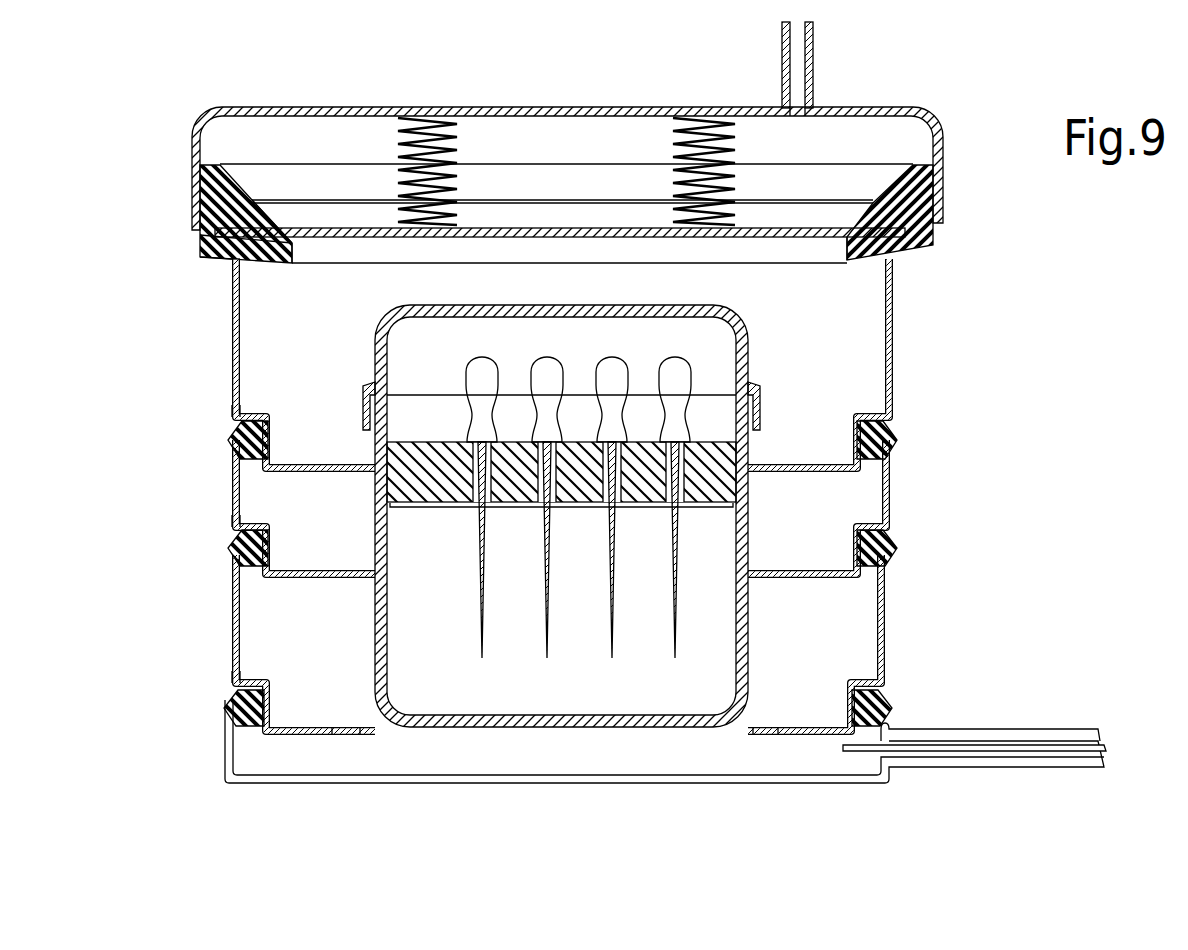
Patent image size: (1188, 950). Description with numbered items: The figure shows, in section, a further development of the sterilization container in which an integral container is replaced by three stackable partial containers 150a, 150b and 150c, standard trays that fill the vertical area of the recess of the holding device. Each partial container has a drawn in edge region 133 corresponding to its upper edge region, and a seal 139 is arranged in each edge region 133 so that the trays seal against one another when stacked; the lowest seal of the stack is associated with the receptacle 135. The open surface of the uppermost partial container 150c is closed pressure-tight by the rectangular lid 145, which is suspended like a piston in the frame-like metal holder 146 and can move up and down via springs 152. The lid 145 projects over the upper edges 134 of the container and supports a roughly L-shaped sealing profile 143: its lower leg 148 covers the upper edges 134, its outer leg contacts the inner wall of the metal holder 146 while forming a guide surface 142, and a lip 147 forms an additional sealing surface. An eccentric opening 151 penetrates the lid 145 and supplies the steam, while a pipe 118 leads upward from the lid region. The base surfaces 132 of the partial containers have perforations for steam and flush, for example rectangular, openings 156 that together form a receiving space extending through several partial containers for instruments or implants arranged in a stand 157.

The tube 118 is at (793, 88).
The base surface 132 is at (585, 731).
The drawn in edge region 133 is at (232, 403).
The upper edges 134 is at (230, 257).
The receptacle 135 is at (375, 779).
The seal 139 is at (232, 440).
The guide surface 142 is at (200, 235).
The sealing profile 143 is at (172, 264).
The lid 145 is at (930, 259).
The metal holder 146 is at (937, 117).
The lip 147 is at (202, 170).
The lower leg 148 is at (272, 255).
The partial container 150a is at (860, 640).
The partial container 150b is at (860, 495).
The partial container 150c is at (853, 377).
The opening 151 is at (358, 232).
The springs 152 is at (453, 137).
The openings 156 is at (342, 734).
The stand 157 is at (695, 695).